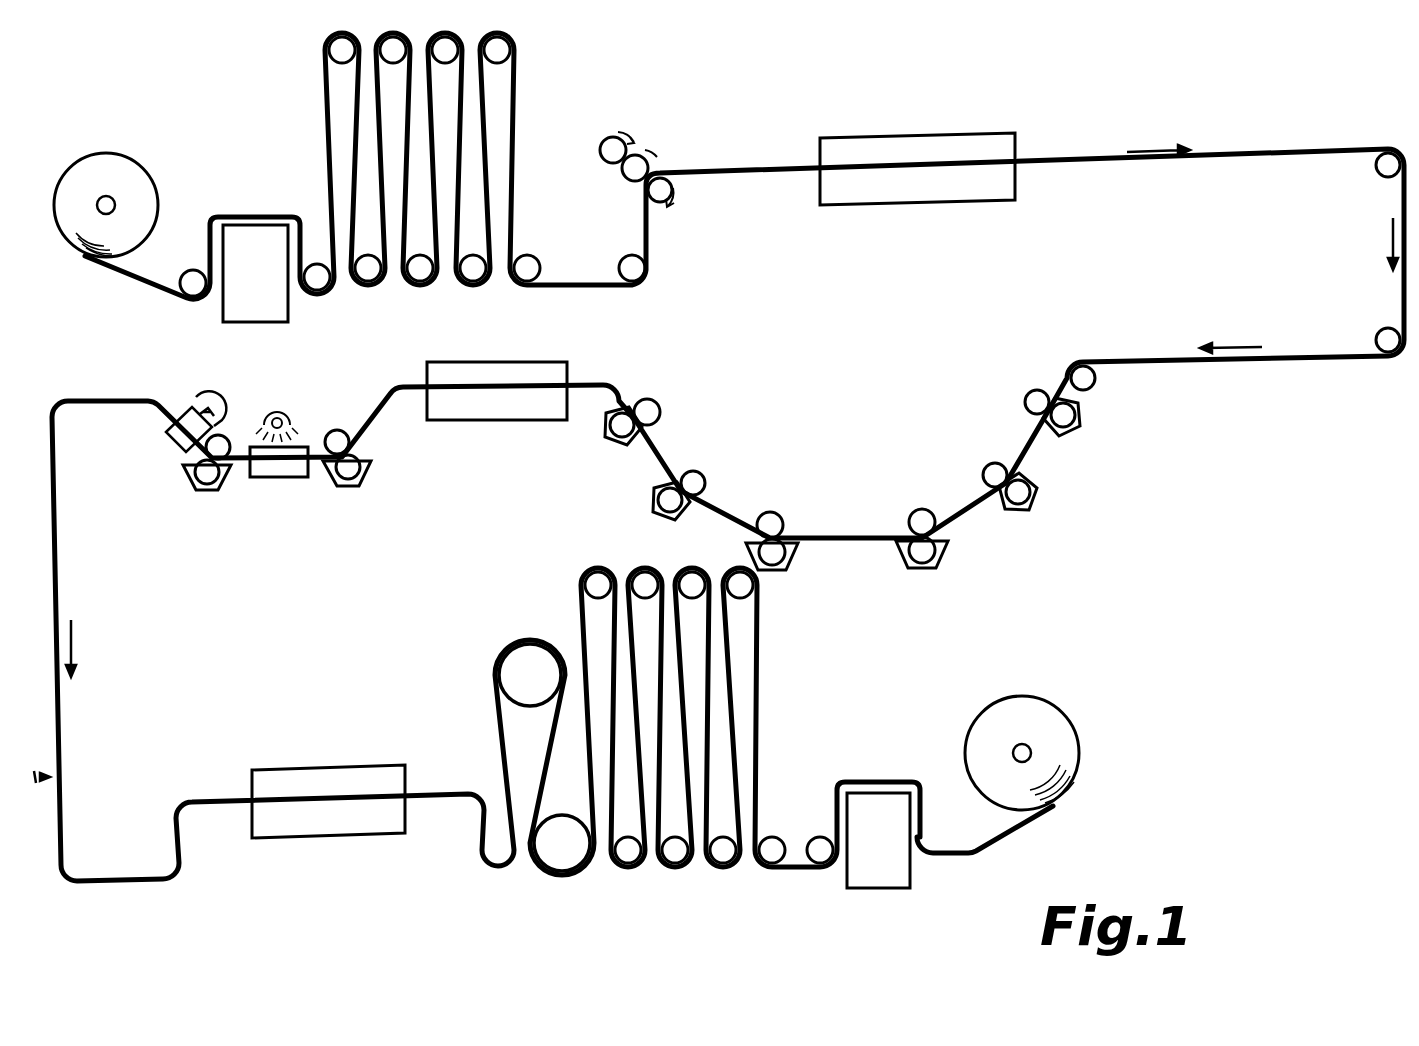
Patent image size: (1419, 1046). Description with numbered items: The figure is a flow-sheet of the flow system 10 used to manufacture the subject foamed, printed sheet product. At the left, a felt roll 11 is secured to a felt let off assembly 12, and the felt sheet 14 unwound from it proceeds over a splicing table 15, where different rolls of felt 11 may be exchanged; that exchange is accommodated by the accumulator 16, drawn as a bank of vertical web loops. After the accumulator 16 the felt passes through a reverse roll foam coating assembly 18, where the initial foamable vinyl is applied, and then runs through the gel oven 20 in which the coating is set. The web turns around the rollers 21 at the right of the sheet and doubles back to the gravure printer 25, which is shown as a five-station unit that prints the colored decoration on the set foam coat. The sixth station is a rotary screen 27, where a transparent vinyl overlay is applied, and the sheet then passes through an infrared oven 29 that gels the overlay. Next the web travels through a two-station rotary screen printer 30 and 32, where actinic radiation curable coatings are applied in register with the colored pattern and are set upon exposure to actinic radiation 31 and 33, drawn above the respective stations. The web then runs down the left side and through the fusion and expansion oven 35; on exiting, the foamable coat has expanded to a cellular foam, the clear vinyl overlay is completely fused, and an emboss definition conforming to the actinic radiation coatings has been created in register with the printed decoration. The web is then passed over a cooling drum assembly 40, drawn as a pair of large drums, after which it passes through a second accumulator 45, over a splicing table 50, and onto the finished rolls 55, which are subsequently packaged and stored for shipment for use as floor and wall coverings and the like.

The flow system 10 is at (1077, 158).
The felt roll 11 is at (138, 192).
The felt let off assembly 12 is at (118, 193).
The felt sheet 14 is at (140, 280).
The splicing table 15 is at (265, 261).
The accumulator 16 is at (410, 303).
The reverse roll foam coating assembly 18 is at (659, 144).
The gel oven 20 is at (930, 137).
The turning rollers 21 is at (1275, 140).
The gravure printer 25 is at (868, 446).
The rotary screen 27 is at (607, 443).
The infrared oven 29 is at (503, 361).
The rotary screen printer station 30 is at (350, 497).
The actinic radiation source 31 is at (278, 492).
The rotary screen printer station 32 is at (204, 502).
The actinic radiation source 33 is at (226, 387).
The fusion and expansion oven 35 is at (342, 766).
The cooling drum assembly 40 is at (566, 819).
The accumulator 45 is at (686, 883).
The splicing table 50 is at (889, 830).
The finished rolls 55 is at (1024, 702).